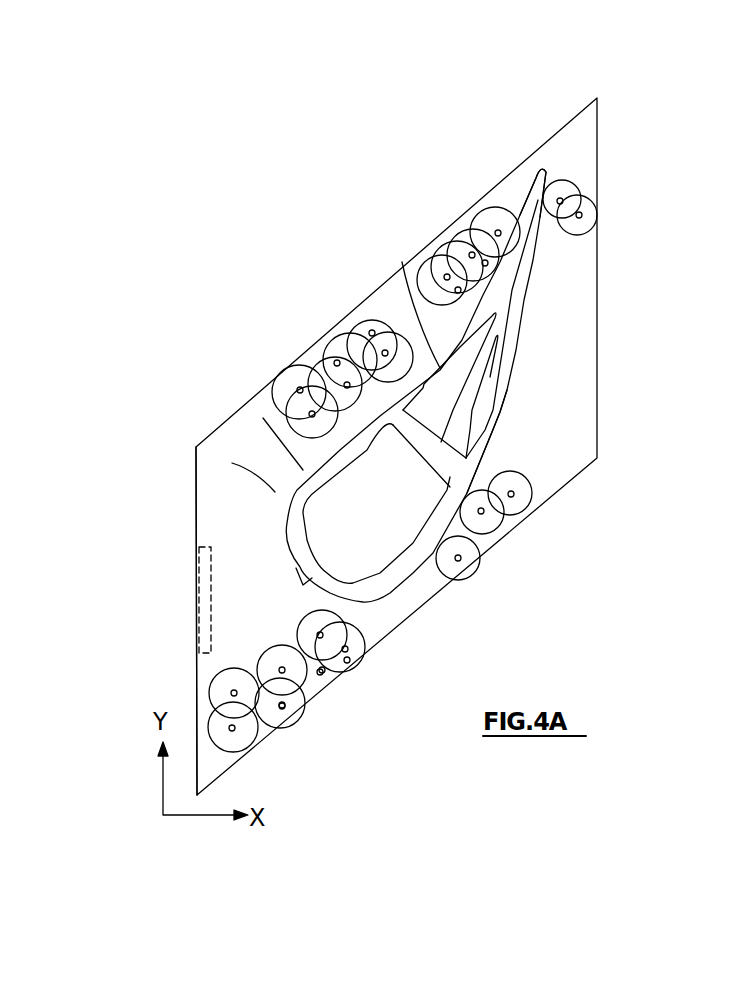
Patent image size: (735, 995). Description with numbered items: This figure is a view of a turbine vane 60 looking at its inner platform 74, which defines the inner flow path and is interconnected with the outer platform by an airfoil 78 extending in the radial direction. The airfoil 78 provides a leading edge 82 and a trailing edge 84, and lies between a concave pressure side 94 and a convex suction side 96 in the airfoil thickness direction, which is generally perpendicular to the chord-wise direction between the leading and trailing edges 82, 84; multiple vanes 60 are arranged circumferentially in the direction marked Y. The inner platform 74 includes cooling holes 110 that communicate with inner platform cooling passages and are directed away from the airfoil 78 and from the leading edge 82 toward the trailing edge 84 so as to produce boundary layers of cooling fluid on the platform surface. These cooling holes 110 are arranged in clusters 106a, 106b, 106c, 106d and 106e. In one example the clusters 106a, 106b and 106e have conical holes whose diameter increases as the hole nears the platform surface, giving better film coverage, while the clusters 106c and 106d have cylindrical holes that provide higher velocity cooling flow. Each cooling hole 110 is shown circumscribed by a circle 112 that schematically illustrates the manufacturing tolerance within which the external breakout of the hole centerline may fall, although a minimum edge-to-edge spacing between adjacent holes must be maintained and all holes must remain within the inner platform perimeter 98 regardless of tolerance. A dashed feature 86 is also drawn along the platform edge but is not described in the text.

The vane 60 is at (632, 201).
The inner platform 74 is at (572, 398).
The airfoil 78 is at (492, 432).
The leading edge 82 is at (315, 582).
The trailing edge 84 is at (545, 164).
The slot 86 is at (195, 587).
The pressure side 94 is at (402, 262).
The suction side 96 is at (507, 390).
The inner platform perimeter 98 is at (196, 500).
The cluster 106a is at (318, 338).
The cluster 106b is at (450, 225).
The cluster 106c is at (580, 230).
The cluster 106d is at (505, 532).
The cluster 106e is at (230, 657).
The cooling hole 110 is at (321, 675).
The circle 112 is at (349, 662).